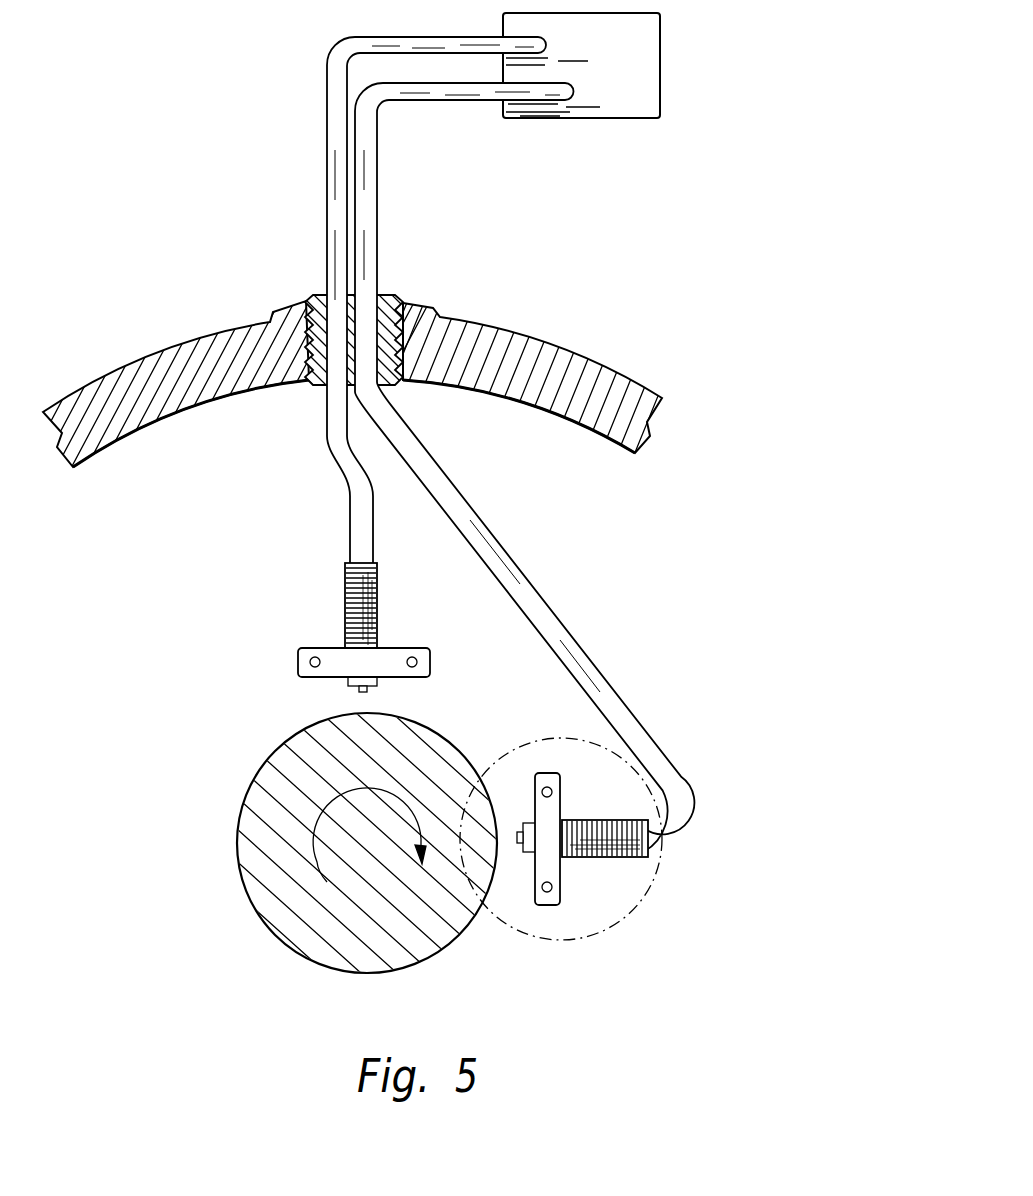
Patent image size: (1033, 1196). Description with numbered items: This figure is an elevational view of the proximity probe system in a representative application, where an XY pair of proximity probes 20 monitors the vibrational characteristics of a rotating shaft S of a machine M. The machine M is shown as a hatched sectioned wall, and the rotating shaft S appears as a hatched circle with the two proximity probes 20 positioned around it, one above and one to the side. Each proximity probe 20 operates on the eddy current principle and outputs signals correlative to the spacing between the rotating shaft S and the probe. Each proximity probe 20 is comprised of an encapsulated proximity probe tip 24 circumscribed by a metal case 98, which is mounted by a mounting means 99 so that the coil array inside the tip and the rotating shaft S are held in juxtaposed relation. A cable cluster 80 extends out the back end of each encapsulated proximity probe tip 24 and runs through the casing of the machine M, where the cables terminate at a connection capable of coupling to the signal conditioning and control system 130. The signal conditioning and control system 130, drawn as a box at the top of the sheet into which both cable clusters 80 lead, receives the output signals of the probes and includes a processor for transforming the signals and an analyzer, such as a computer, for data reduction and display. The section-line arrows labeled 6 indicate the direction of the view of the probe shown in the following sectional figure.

The machine M is at (624, 357).
The signal conditioning and control system 130 is at (622, 118).
The cable cluster 80 is at (334, 446).
The proximity probe 20 is at (480, 726).
The metal case 98 is at (345, 620).
The mounting means 99 is at (298, 665).
The encapsulated proximity probe tip 24 is at (362, 692).
The rotating shaft S is at (258, 770).
The section view direction 6 is at (500, 757).